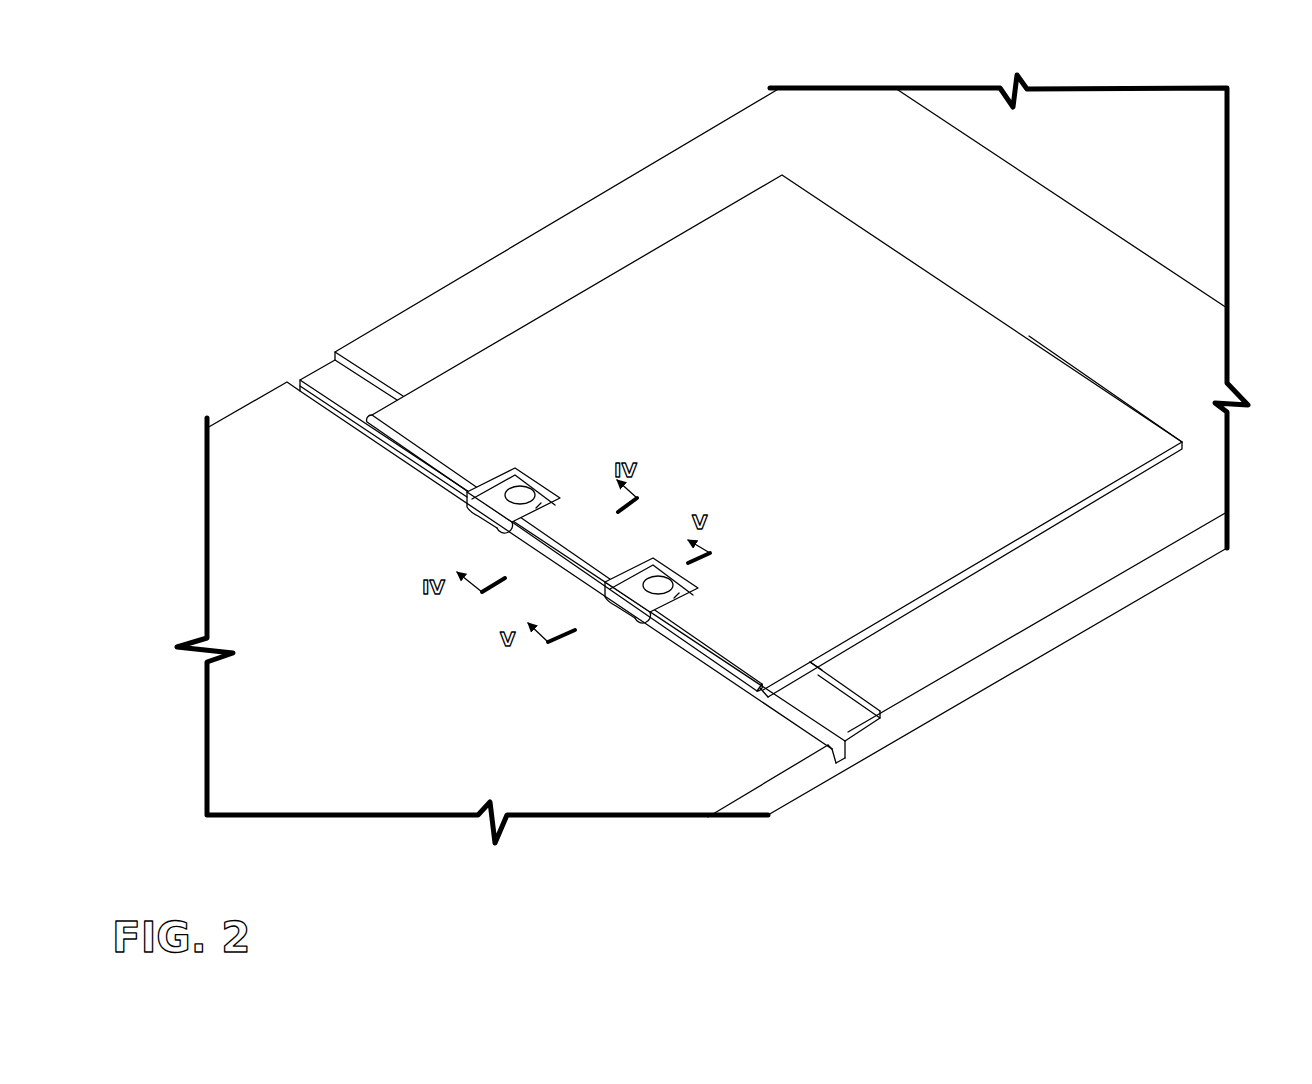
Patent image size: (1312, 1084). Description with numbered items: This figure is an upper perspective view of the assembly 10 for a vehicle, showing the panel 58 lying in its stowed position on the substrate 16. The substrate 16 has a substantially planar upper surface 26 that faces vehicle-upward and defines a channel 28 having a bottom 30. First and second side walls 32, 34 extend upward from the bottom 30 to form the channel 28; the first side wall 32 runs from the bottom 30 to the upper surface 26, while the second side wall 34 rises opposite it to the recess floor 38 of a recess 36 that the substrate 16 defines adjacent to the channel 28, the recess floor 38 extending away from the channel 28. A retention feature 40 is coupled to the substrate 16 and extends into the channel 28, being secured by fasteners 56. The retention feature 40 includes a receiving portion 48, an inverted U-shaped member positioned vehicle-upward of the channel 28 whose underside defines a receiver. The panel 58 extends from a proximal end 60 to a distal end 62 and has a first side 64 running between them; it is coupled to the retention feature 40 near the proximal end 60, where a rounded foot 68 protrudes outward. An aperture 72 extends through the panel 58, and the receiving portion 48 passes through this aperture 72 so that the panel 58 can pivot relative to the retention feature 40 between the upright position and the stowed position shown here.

The assembly 10 is at (437, 180).
The substrate 16 is at (578, 247).
The upper surface 26 is at (657, 200).
The channel 28 is at (802, 705).
The bottom 30 is at (840, 765).
The first side wall 32 is at (833, 762).
The second side wall 34 is at (847, 747).
The recess 36 is at (820, 671).
The recess floor 38 is at (850, 712).
The retention feature 40 is at (627, 567).
The receiving portion 48 is at (483, 503).
The fasteners 56 is at (505, 518).
The panel 58 is at (814, 384).
The proximal end 60 is at (670, 627).
The distal end 62 is at (1029, 335).
The first side 64 is at (748, 230).
The foot 68 is at (750, 678).
The aperture 72 is at (538, 507).